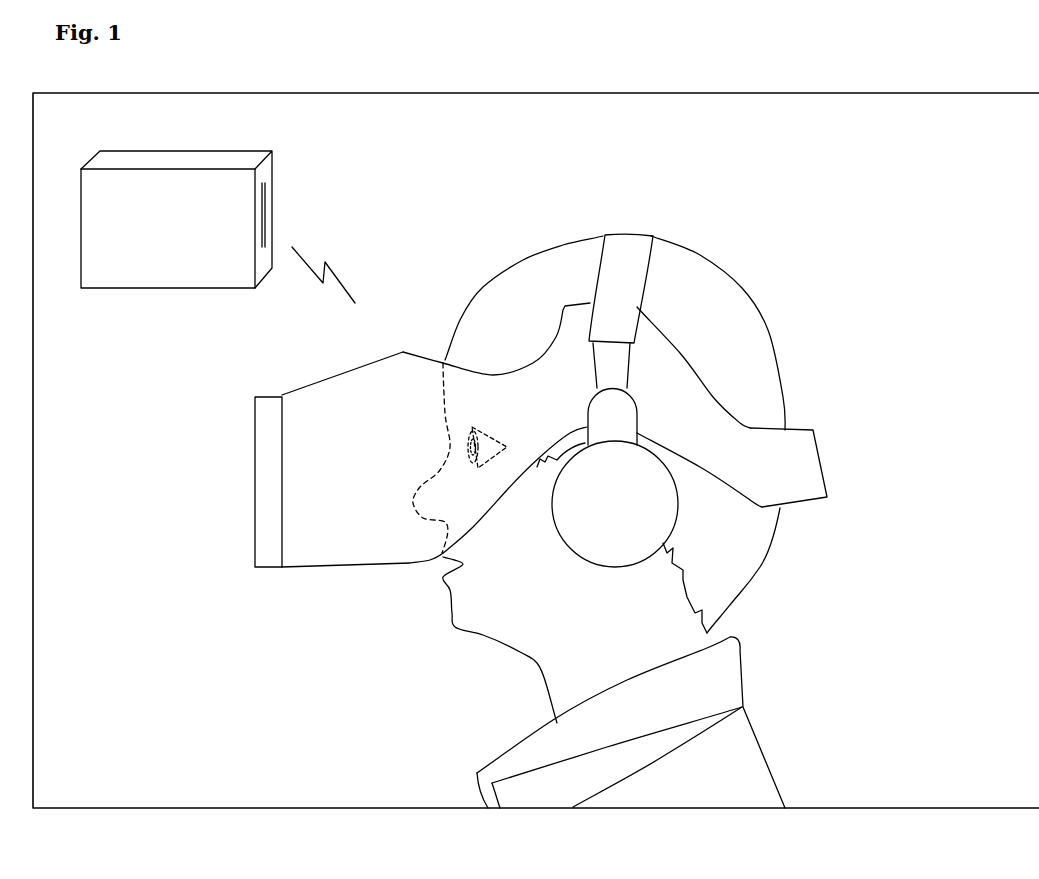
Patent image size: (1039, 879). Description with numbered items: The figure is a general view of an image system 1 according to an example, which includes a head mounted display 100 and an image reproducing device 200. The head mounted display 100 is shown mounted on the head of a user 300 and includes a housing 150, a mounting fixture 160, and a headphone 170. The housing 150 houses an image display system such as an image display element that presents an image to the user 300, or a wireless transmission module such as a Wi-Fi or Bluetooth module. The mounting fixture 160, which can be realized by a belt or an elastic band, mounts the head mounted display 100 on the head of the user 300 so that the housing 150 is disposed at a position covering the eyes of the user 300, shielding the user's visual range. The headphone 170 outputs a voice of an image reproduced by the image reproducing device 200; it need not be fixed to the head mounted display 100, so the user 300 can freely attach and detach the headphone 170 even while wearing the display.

The image system 1 is at (587, 93).
The head mounted display 100 is at (373, 328).
The housing 150 is at (340, 567).
The mounting fixture 160 is at (823, 460).
The headphone 170 is at (623, 233).
The image reproducing device 200 is at (273, 180).
The user 300 is at (763, 278).